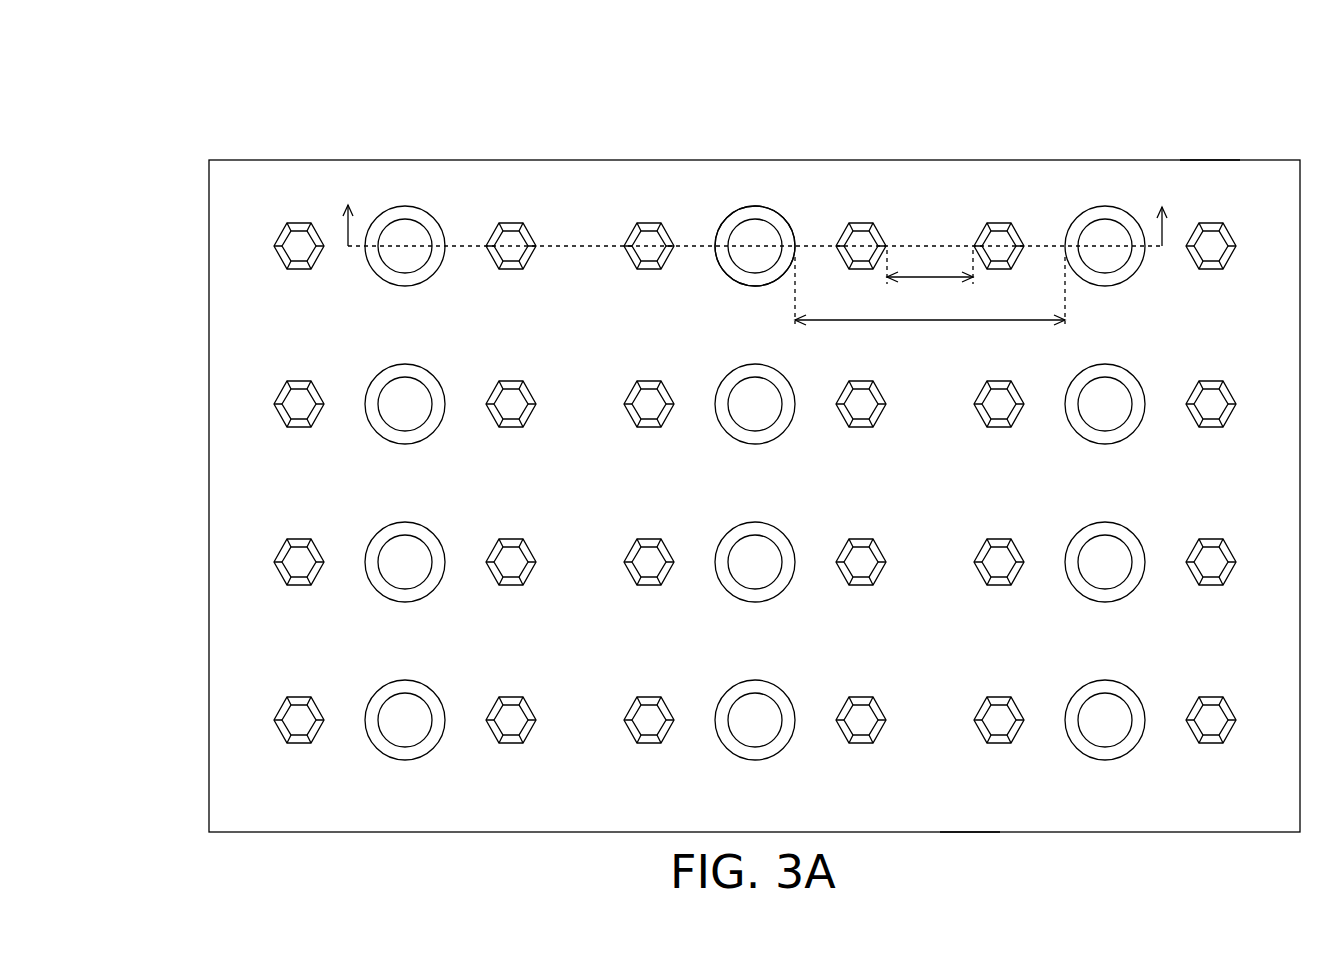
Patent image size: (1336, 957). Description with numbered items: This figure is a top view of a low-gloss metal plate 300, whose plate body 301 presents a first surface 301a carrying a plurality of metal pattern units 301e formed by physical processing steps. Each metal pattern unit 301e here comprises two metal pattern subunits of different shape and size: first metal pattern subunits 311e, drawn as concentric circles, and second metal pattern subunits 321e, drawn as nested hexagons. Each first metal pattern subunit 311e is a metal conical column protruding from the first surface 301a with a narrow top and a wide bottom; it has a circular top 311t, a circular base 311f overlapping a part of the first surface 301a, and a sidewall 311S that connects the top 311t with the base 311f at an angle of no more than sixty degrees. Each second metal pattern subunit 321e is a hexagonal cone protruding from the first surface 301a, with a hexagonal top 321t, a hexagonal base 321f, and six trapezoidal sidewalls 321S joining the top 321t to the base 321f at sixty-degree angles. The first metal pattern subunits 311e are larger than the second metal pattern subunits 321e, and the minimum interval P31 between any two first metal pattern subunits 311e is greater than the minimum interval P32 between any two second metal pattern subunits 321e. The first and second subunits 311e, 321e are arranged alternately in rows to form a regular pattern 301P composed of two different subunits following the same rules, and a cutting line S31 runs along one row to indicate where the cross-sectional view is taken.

The low-gloss metal plate 300 is at (141, 58).
The substrate 301 is at (209, 236).
The regular pattern 301P is at (1203, 150).
The first surface 301a is at (967, 812).
The metal pattern units 301e is at (1033, 76).
The first metal pattern subunits 311e is at (840, 118).
The circular base 311f is at (720, 224).
The circular top 311t is at (753, 237).
The sidewall 311S is at (783, 224).
The second metal pattern subunits 321e is at (1097, 118).
The hexagonal base 321f is at (999, 224).
The hexagonal top 321t is at (1003, 240).
The trapezoidal sidewalls 321S is at (1013, 238).
The section line S31 is at (757, 211).
The minimum interval between first metal pattern subunits P31 is at (930, 302).
The minimum interval between second metal pattern subunits P32 is at (930, 278).